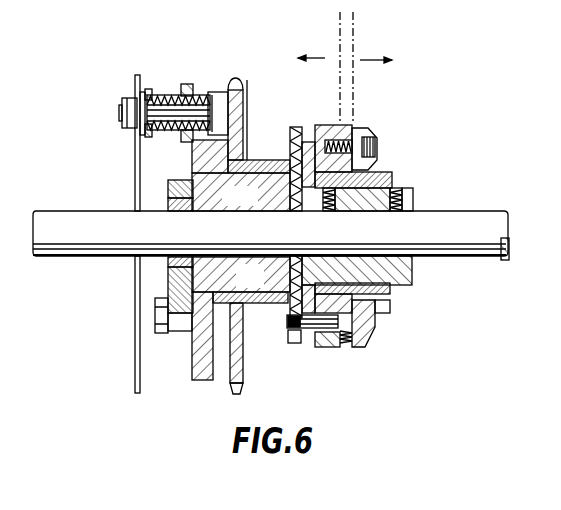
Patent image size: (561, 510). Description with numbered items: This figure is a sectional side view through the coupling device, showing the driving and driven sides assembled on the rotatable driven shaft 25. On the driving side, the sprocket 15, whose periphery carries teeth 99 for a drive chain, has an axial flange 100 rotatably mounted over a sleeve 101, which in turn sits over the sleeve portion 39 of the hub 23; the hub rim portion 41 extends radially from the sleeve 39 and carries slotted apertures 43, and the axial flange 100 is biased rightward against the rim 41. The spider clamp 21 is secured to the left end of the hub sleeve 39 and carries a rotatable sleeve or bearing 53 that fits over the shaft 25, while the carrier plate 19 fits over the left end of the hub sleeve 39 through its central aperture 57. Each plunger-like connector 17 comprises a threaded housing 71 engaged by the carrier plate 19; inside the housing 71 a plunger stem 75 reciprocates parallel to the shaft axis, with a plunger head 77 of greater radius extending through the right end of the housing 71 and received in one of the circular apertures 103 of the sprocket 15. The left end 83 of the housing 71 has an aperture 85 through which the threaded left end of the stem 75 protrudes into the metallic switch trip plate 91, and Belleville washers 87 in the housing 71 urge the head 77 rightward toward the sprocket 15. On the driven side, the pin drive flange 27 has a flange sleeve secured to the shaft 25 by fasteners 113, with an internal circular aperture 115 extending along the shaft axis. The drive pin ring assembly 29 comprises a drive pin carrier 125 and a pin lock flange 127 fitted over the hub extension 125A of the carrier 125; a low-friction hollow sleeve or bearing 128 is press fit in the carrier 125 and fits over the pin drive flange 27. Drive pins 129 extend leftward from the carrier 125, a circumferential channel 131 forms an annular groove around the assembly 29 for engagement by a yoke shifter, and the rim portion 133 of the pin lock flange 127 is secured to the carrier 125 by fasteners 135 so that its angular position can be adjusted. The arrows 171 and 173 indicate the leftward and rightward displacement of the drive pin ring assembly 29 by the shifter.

The sprocket 15 is at (248, 100).
The plunger-like connector 17 is at (165, 95).
The carrier plate 19 is at (207, 92).
The spider clamp 21 is at (140, 190).
The hub 23 is at (290, 150).
The rotatable driven shaft 25 is at (482, 212).
The pin drive flange 27 is at (313, 126).
The pin drive ring assembly 29 is at (373, 119).
The hub sleeve portion 39 is at (259, 287).
The hub rim portion 41 is at (308, 142).
The slotted apertures 43 is at (288, 334).
The rotatable sleeve or bearing 53 is at (175, 258).
The central aperture 57 is at (198, 182).
The housing 71 is at (184, 84).
The plunger stem 75 is at (150, 96).
The plunger head 77 is at (230, 104).
The left end of housing 83 is at (140, 92).
The aperture 85 is at (140, 133).
The Belleville washers 87 is at (143, 146).
The switch trip plate 91 is at (135, 333).
The teeth 99 is at (243, 76).
The axial flange 100 is at (270, 162).
The sleeve 101 is at (168, 332).
The circular apertures 103 is at (248, 124).
The fasteners 113 is at (415, 193).
The internal circular aperture 115 is at (405, 219).
The drive pin carrier 125 is at (330, 348).
The hub extension 125A is at (398, 186).
The pin lock flange 127 is at (378, 328).
The hollow cylindrical sleeve or bearing 128 is at (402, 184).
The drive pins 129 is at (305, 330).
The circumferential channel 131 is at (353, 124).
The rim portion 133 is at (382, 170).
The fasteners 135 is at (380, 138).
The arrow 171 is at (310, 58).
The arrow 173 is at (368, 59).